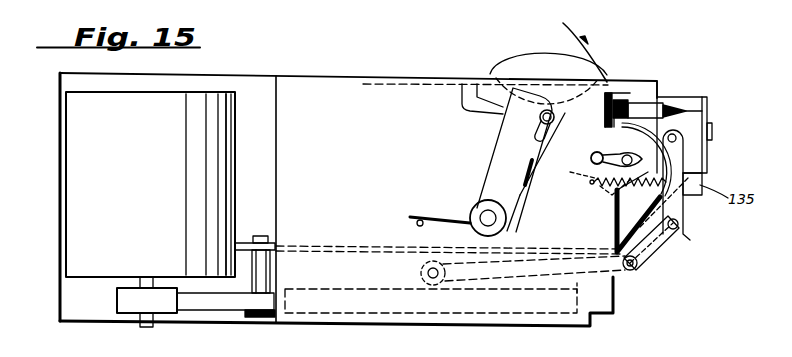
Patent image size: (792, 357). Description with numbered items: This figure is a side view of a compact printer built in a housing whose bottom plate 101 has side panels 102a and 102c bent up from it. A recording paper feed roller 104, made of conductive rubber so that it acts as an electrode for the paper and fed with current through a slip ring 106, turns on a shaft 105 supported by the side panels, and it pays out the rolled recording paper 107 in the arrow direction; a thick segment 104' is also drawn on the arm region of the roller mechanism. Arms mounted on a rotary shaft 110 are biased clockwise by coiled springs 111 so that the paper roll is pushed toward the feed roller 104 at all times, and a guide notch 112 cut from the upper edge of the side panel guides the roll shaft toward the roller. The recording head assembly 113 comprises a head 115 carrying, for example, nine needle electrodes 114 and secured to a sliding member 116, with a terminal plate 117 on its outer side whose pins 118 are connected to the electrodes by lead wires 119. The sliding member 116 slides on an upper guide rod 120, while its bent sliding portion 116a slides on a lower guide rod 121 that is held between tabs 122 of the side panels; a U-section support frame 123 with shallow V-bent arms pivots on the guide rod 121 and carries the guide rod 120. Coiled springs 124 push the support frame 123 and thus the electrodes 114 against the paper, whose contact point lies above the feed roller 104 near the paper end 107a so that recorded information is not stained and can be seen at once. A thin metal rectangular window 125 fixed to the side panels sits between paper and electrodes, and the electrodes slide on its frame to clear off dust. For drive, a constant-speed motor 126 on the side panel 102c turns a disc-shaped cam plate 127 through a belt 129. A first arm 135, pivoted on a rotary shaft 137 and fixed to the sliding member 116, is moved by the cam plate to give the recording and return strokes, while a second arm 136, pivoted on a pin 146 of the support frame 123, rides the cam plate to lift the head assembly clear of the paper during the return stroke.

The bottom plate 101 is at (82, 324).
The side panel 102a is at (314, 78).
The side panel 102c is at (183, 75).
The recording paper feed roller 104 is at (506, 160).
The arm extension 104' is at (551, 181).
The shaft 105 is at (590, 180).
The slip ring 106 is at (628, 212).
The rolled recording paper 107 is at (518, 62).
The end of the recording paper 107a is at (570, 25).
The rotary shaft 110 is at (500, 222).
The coiled spring 111 is at (442, 216).
The guide notch 112 is at (462, 82).
The recording head assembly 113 is at (713, 147).
The needle electrode 114 is at (626, 98).
The head 115 is at (658, 97).
The sliding member 116 is at (700, 165).
The sliding portion 116a is at (690, 200).
The terminal plate 117 is at (705, 95).
The pin 118 is at (712, 102).
The lead wire 119 is at (664, 102).
The guide rod 120 is at (680, 132).
The guide rod 121 is at (643, 275).
The tab 122 is at (624, 292).
The support frame 123 is at (660, 255).
The coiled spring 124 is at (610, 193).
The rectangular window 125 is at (609, 90).
The constant-speed drive motor 126 is at (224, 91).
The cam plate 127 is at (333, 288).
The belt 129 is at (230, 324).
The first arm 135 is at (333, 246).
The second arm 136 is at (603, 285).
The rotary shaft 137 is at (258, 236).
The pin 146 is at (684, 236).